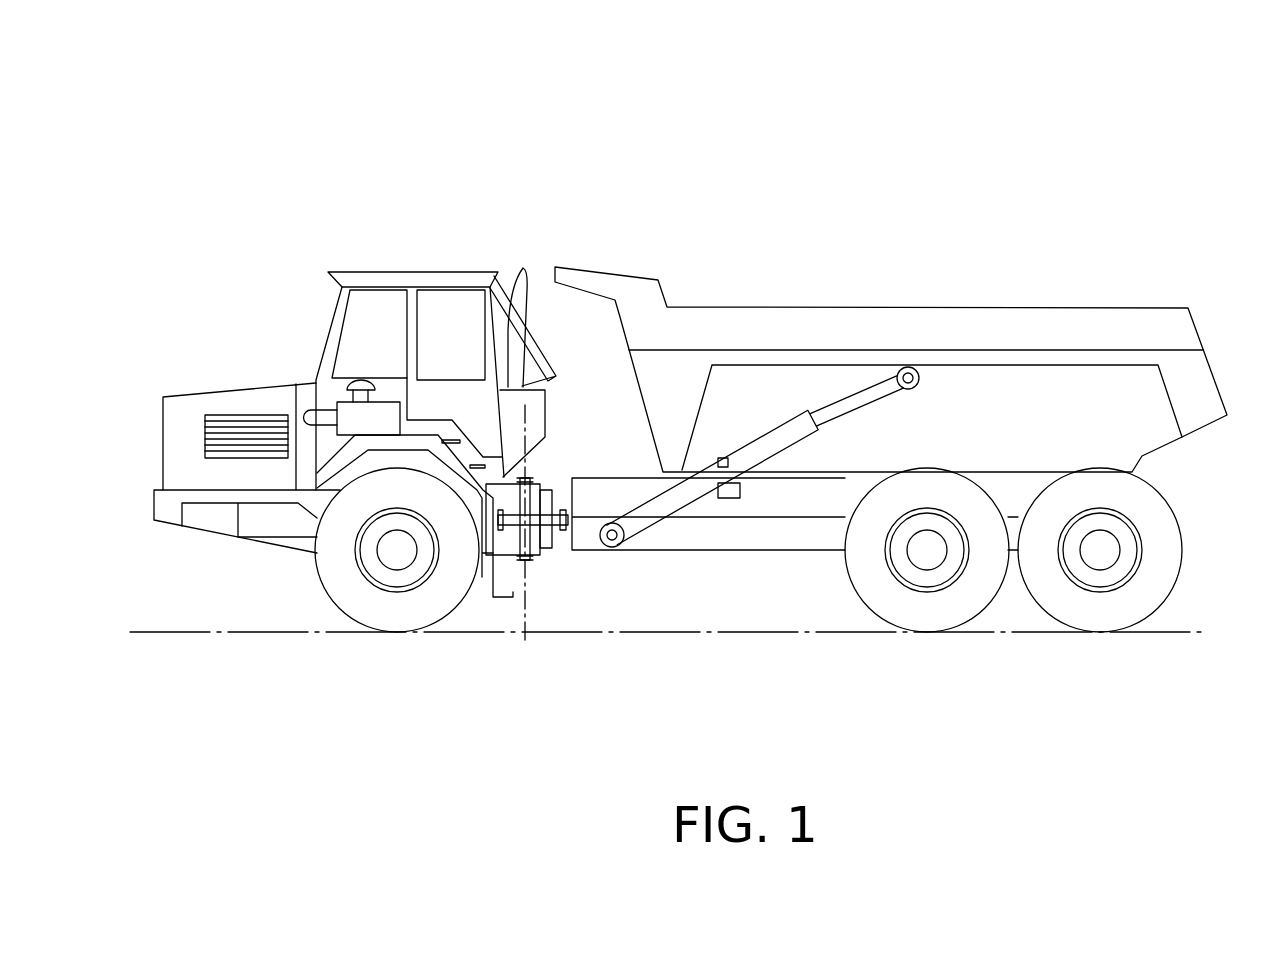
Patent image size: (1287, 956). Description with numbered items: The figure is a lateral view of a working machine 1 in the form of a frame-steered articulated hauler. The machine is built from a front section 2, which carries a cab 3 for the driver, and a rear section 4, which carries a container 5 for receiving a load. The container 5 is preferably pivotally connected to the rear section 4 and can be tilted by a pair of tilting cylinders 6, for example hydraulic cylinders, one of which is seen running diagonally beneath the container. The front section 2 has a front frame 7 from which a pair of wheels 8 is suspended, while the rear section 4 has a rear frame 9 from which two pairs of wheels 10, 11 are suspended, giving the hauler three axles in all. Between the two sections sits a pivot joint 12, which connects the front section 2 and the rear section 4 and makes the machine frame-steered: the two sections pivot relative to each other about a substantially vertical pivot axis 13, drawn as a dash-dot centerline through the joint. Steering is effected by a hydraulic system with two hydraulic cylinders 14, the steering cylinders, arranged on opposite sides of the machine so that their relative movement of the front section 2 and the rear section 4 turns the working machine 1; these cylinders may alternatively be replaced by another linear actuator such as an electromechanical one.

The working machine 1 is at (689, 387).
The front section 2 is at (355, 452).
The cab 3 is at (423, 280).
The rear section 4 is at (902, 466).
The container 5 is at (924, 320).
The tilting cylinders 6 is at (682, 493).
The front frame 7 is at (258, 525).
The wheels 8 is at (347, 585).
The rear frame 9 is at (780, 538).
The wheels 10 is at (975, 592).
The wheels 11 is at (1152, 592).
The pivot joint 12 is at (533, 535).
The vertical pivot axis 13 is at (525, 615).
The hydraulic cylinders 14 is at (543, 550).